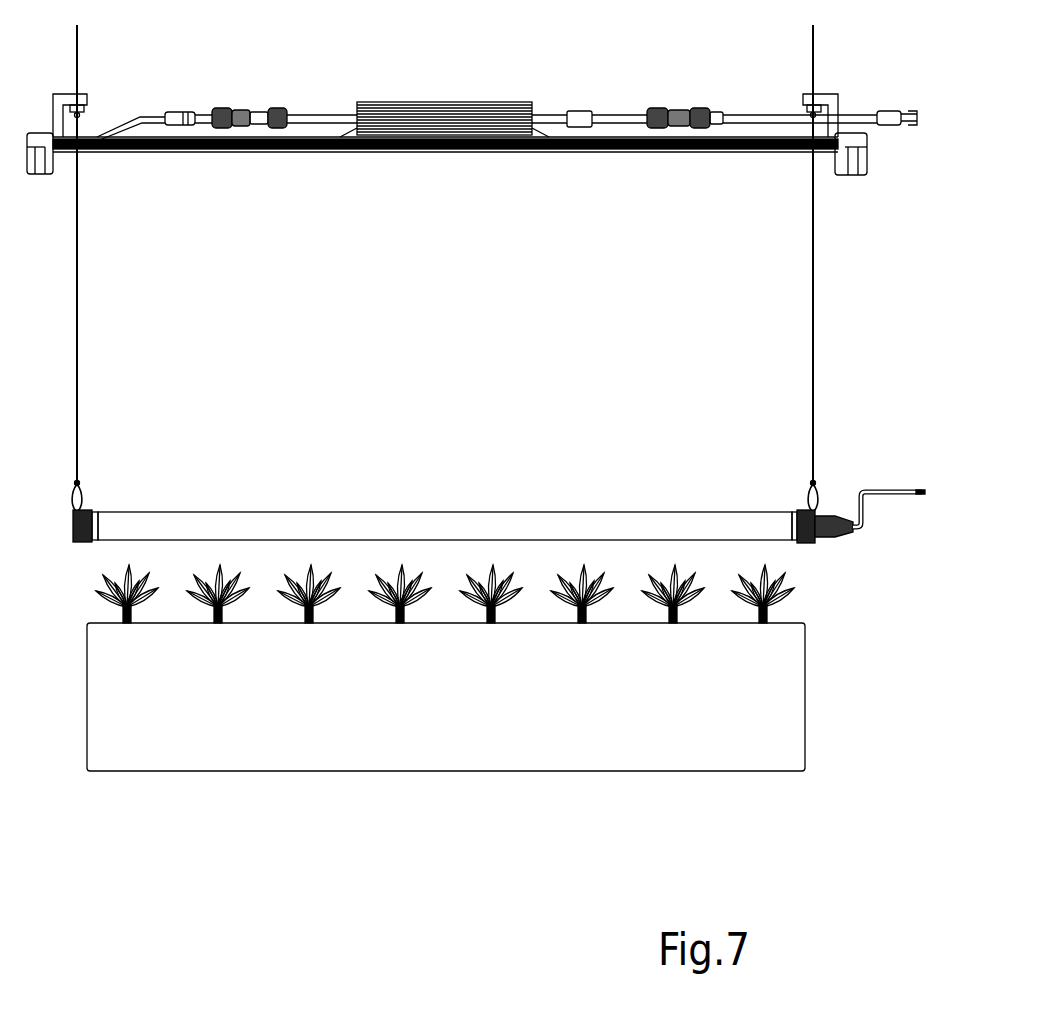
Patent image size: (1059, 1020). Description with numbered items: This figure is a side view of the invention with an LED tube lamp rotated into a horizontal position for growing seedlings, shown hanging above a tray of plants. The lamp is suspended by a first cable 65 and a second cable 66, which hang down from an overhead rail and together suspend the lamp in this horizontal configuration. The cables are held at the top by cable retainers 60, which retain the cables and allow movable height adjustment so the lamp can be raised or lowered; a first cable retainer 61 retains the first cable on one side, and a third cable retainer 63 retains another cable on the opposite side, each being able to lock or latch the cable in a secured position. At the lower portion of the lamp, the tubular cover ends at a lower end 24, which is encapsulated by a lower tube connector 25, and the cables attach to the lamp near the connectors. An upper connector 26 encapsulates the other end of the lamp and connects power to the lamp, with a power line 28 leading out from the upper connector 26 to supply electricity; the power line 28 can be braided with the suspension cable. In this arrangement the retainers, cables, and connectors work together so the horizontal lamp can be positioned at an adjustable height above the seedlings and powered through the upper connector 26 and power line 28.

The cable retainer 60 is at (92, 105).
The first cable retainer 61 is at (798, 87).
The third cable retainer 63 is at (57, 91).
The first cable 65 is at (812, 313).
The second cable 66 is at (82, 328).
The lower tube connector 25 is at (70, 518).
The lower end 24 is at (63, 528).
The upper connector 26 is at (832, 537).
The power line 28 is at (872, 488).